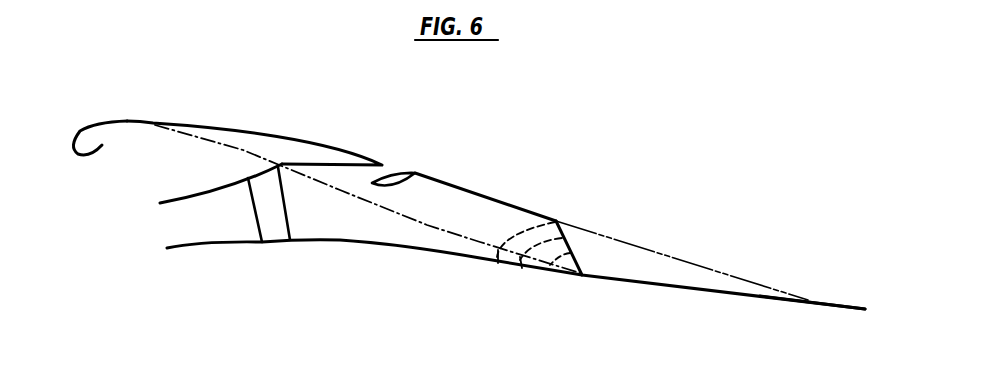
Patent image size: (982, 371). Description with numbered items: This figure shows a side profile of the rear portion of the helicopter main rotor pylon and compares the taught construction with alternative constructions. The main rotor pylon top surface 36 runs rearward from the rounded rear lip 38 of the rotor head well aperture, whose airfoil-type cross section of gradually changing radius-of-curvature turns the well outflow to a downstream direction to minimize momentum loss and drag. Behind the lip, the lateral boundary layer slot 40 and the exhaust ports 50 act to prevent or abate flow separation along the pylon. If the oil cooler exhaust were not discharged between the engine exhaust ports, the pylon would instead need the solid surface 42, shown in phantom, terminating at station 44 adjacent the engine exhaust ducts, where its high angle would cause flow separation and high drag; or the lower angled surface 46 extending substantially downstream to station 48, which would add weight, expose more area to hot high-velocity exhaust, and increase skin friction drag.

The main rotor pylon top surface 36 is at (324, 148).
The rear lip of rotor head well aperture 38 is at (72, 151).
The lateral boundary layer slot 40 is at (388, 165).
The solid surface 42 is at (392, 208).
The station adjacent engine exhaust ducts 44 is at (585, 273).
The lower angled surface 46 is at (652, 250).
The station downstream 48 is at (813, 297).
The exhaust ports 50 is at (565, 223).